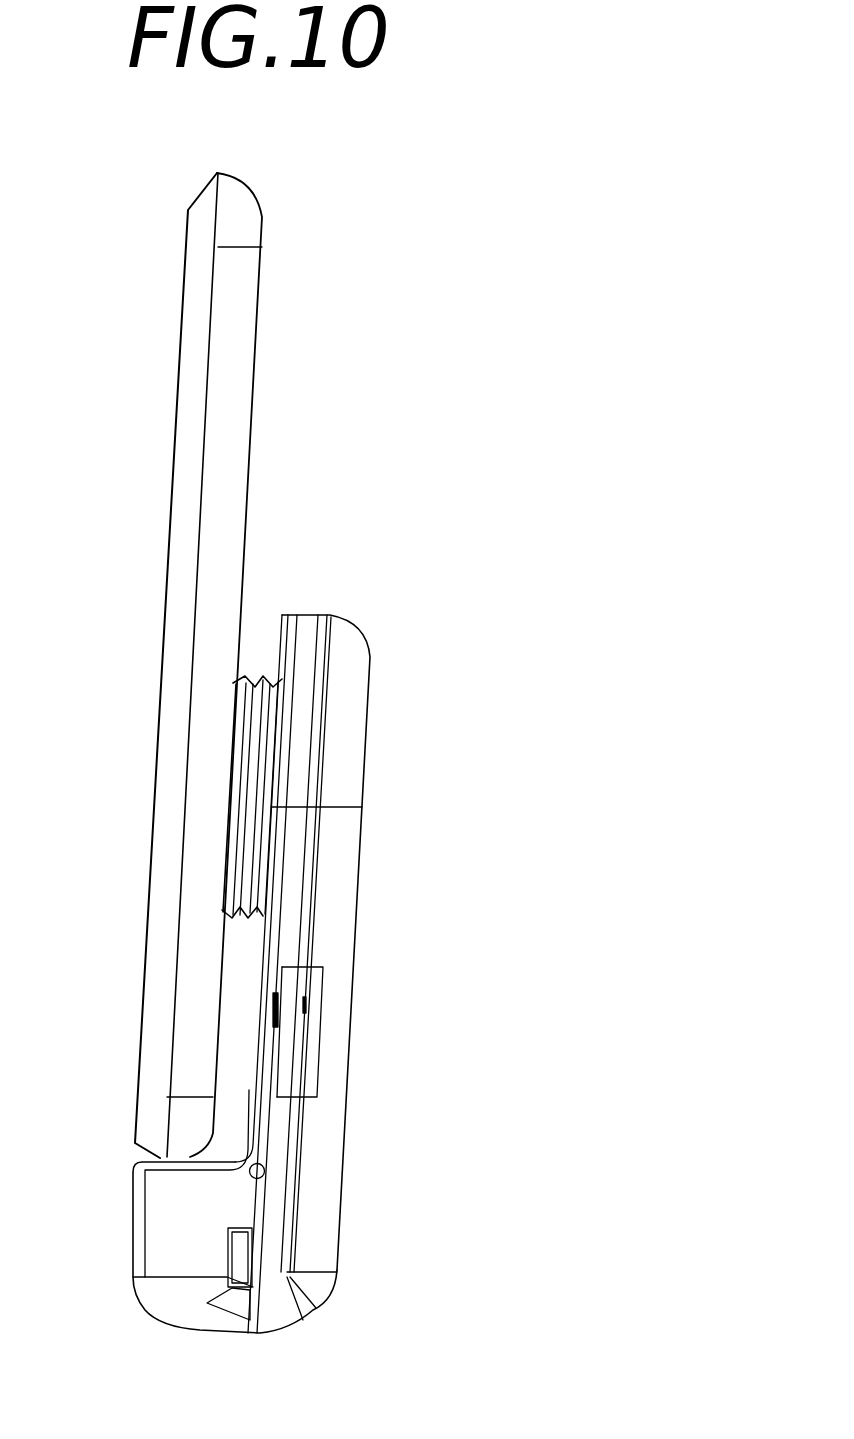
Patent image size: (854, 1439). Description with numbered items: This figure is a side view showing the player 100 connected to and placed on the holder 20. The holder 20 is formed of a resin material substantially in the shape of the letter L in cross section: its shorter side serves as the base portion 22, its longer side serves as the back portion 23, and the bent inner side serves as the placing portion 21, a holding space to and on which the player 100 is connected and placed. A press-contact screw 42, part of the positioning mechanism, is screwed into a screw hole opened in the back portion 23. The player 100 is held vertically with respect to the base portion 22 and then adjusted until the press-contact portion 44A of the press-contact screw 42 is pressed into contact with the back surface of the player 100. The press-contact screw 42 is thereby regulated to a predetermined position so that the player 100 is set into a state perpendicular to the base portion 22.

The player 100 is at (235, 207).
The holder 20 is at (401, 611).
The placing portion 21 is at (258, 1010).
The base portion 22 is at (177, 1227).
The back portion 23 is at (340, 865).
The press-contact screw 42 is at (245, 680).
The press-contact portion 44A is at (236, 787).